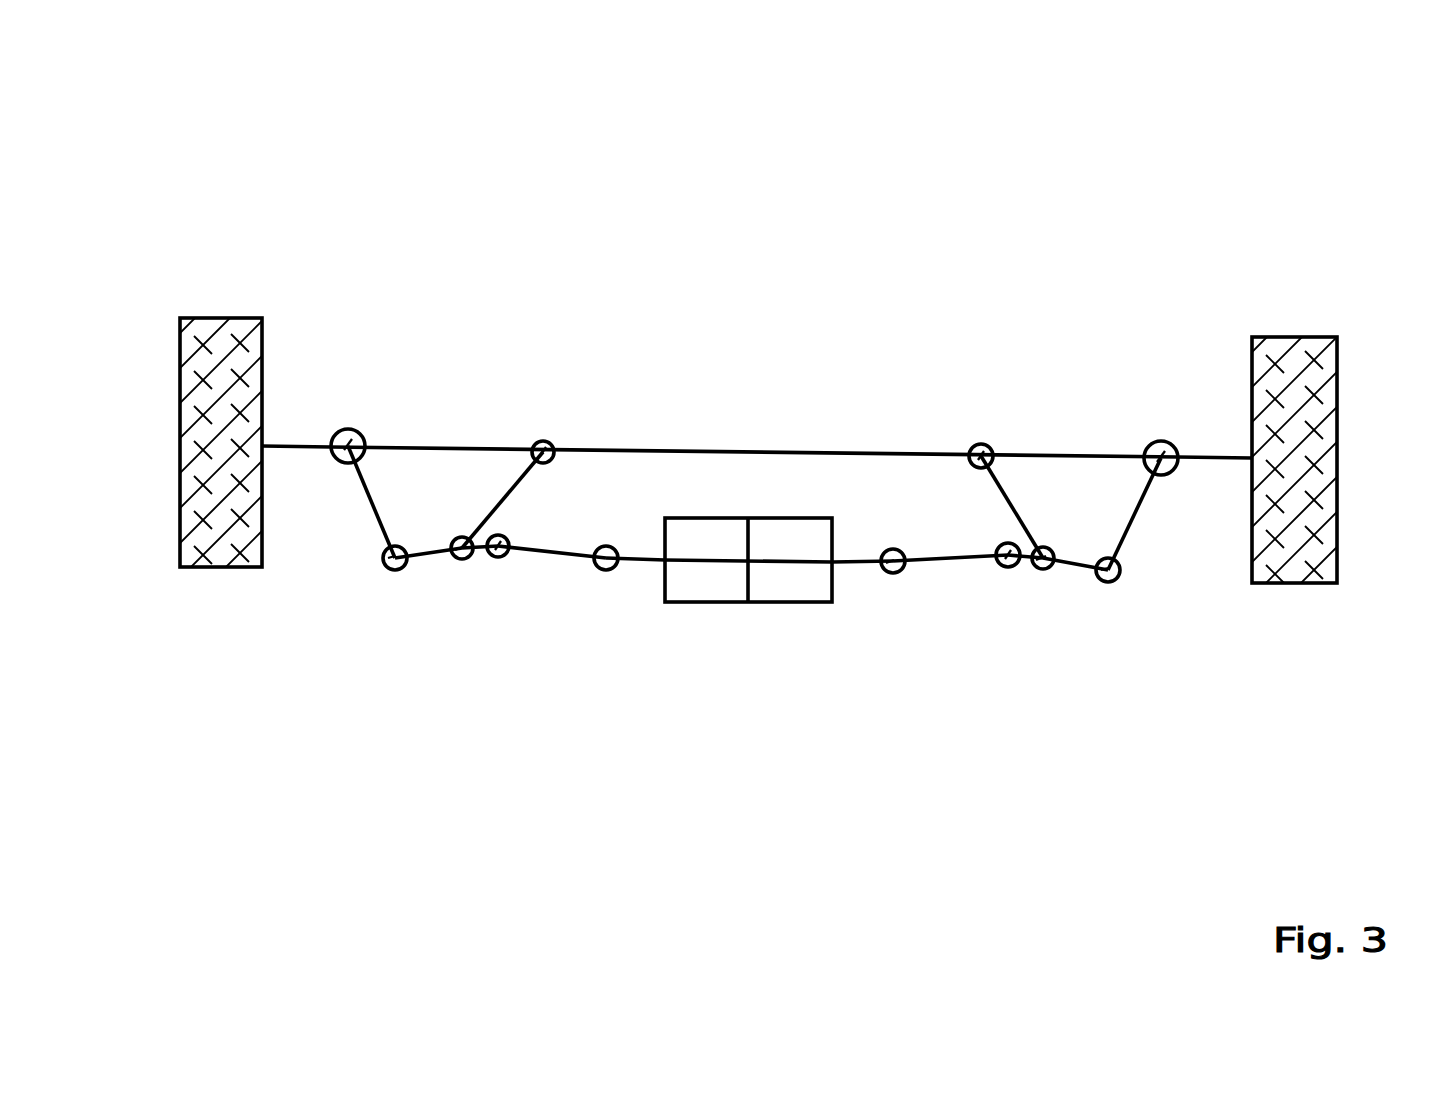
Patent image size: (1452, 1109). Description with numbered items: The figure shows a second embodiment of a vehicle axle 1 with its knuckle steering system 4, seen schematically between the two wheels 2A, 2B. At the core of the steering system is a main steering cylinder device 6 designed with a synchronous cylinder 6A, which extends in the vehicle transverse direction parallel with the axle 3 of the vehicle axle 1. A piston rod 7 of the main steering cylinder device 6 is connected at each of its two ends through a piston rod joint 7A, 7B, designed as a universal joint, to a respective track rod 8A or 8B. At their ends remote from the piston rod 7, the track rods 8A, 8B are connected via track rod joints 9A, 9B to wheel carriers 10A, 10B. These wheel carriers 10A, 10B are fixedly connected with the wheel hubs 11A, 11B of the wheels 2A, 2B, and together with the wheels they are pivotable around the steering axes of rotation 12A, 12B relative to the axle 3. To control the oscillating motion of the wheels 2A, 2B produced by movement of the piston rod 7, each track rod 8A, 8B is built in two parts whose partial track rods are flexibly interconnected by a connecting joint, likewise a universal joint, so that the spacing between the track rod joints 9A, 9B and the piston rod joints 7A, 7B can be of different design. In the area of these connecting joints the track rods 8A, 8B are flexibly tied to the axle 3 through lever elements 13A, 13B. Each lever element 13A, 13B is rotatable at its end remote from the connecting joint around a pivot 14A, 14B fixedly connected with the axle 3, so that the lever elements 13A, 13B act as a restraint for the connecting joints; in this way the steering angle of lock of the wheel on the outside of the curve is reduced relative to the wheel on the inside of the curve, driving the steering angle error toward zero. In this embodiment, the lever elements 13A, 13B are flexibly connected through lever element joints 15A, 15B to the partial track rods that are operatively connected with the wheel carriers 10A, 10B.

The vehicle axle 1 is at (200, 203).
The wheel 2A is at (195, 417).
The wheel 2B is at (1337, 347).
The axle 3 is at (817, 452).
The knuckle steering system 4 is at (632, 630).
The main steering cylinder device 6 is at (780, 622).
The synchronous cylinder 6A is at (708, 582).
The piston rod 7 is at (845, 565).
The piston rod joint 7A is at (603, 570).
The piston rod joint 7B is at (895, 574).
The track rod 8A is at (452, 605).
The track rod 8B is at (1097, 620).
The track rod joint 9A is at (387, 558).
The track rod joint 9B is at (1122, 573).
The wheel carrier 10A is at (368, 508).
The wheel carrier 10B is at (1132, 543).
The wheel hub 11A is at (277, 437).
The wheel hub 11B is at (1203, 458).
The steering axis of rotation 12A is at (350, 427).
The steering axis of rotation 12B is at (1163, 443).
The lever element 13A is at (508, 445).
The lever element 13B is at (1020, 513).
The pivot 14A is at (553, 446).
The pivot 14B is at (983, 447).
The lever element joint 15A is at (450, 560).
The lever element joint 15B is at (1042, 569).